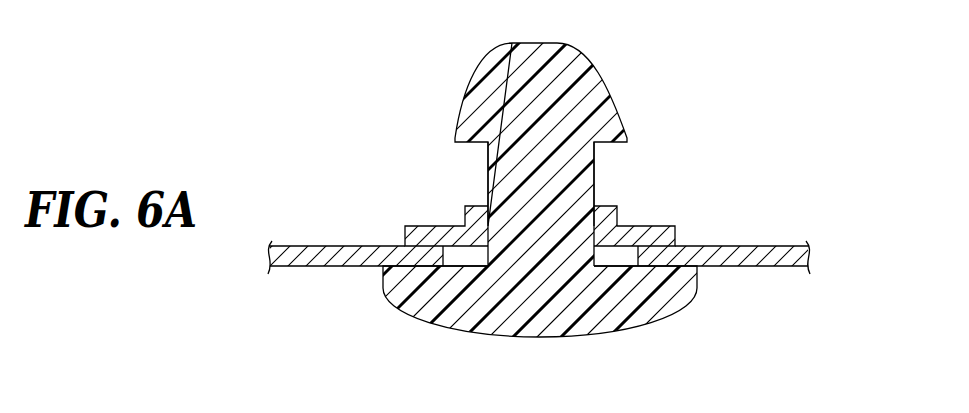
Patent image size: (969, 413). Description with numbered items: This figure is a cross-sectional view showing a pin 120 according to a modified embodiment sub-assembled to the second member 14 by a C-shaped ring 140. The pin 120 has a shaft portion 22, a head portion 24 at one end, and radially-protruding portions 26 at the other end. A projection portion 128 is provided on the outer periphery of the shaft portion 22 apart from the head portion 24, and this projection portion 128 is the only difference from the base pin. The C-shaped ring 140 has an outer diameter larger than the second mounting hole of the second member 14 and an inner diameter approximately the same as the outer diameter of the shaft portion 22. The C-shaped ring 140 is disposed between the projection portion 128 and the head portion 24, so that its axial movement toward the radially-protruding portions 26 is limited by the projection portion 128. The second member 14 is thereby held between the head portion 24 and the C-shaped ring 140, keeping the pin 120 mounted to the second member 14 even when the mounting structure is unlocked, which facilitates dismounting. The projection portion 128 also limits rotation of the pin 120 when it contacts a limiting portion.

The pin 120 is at (580, 387).
The radially-protruding portions 26 is at (625, 122).
The shaft portion 22 is at (487, 160).
The head portion 24 is at (667, 288).
The projection portion 128 is at (477, 205).
The C-shaped ring 140 is at (645, 225).
The second member 14 is at (778, 248).